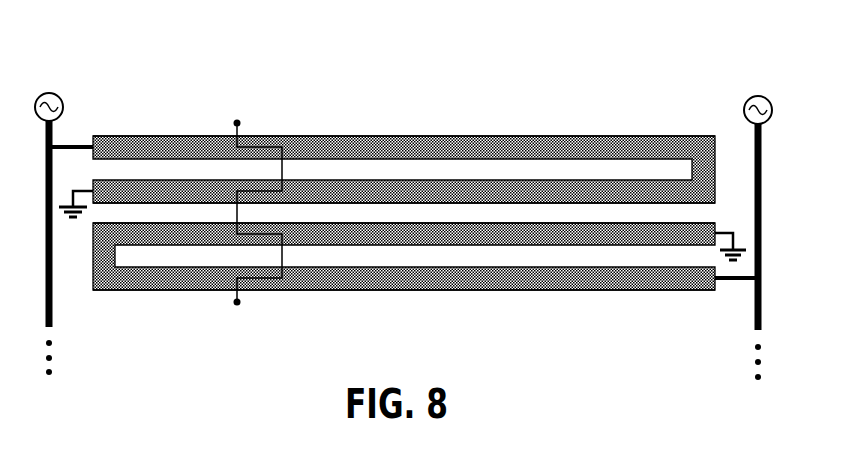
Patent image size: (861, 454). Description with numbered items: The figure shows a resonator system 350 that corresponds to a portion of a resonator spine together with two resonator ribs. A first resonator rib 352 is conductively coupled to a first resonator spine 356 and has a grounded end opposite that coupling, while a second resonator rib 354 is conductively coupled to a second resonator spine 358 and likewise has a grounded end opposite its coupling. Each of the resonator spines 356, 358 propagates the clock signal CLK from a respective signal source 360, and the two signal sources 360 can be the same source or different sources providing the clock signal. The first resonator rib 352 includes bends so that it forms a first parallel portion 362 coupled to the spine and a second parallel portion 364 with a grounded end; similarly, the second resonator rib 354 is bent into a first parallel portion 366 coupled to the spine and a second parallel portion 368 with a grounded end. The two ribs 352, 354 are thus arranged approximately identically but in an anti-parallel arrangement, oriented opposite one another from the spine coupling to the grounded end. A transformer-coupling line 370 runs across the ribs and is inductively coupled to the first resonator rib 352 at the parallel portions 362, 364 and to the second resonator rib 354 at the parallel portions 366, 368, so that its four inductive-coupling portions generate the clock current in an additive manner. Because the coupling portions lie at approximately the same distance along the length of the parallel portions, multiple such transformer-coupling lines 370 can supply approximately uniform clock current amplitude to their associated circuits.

The resonator system 350 is at (421, 200).
The first resonator rib 352 is at (404, 148).
The second resonator rib 354 is at (404, 265).
The first resonator spine 356 is at (53, 297).
The second resonator spine 358 is at (755, 305).
The signal source 360 is at (58, 96).
The first parallel portion 362 is at (567, 137).
The second parallel portion 364 is at (567, 180).
The first parallel portion 366 is at (567, 223).
The second parallel portion 368 is at (567, 267).
The transformer-coupling line 370 is at (271, 114).